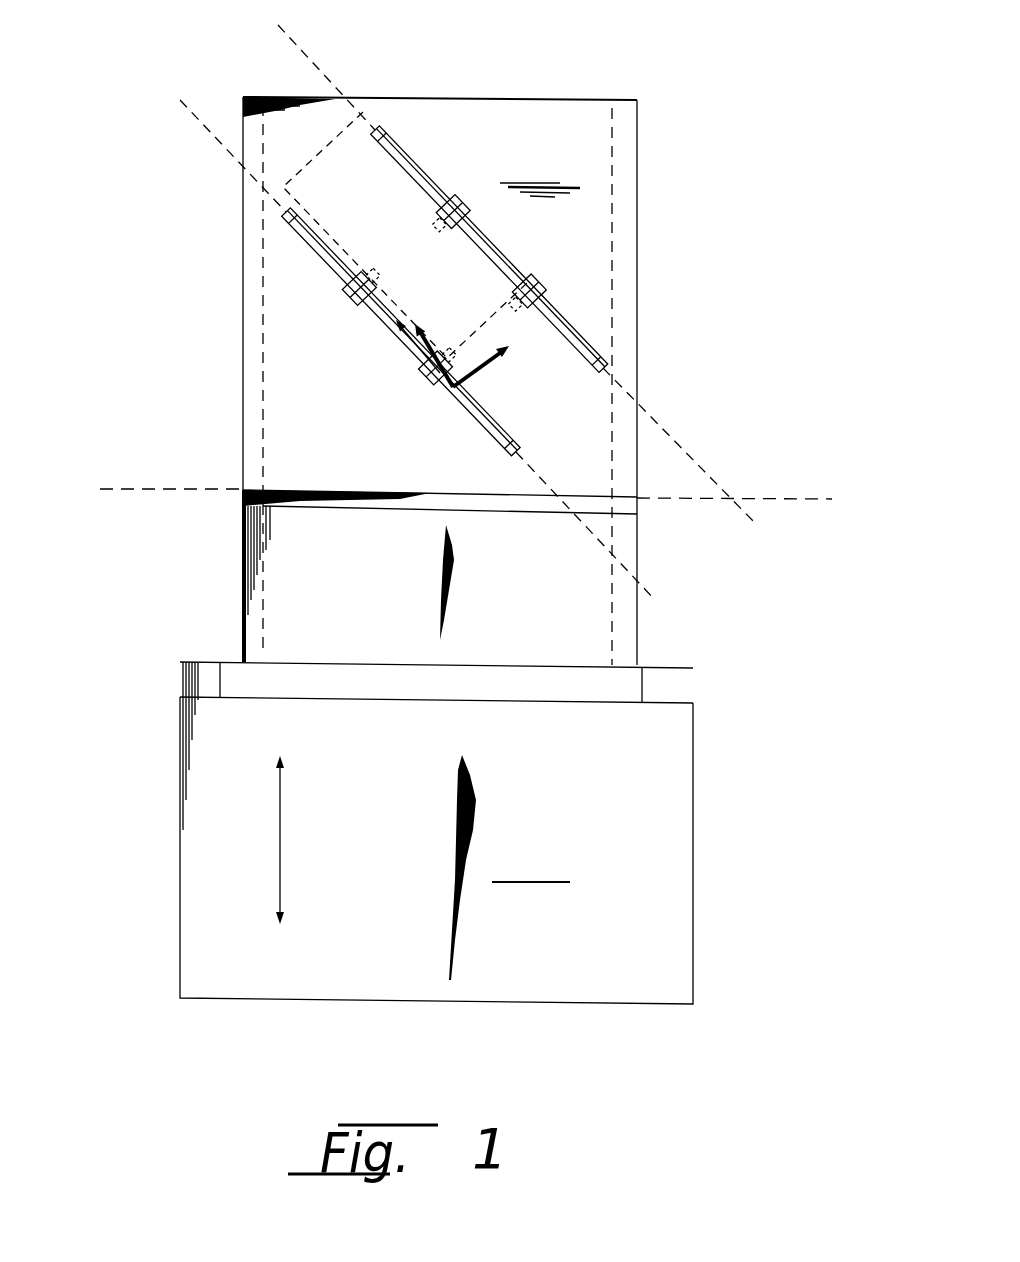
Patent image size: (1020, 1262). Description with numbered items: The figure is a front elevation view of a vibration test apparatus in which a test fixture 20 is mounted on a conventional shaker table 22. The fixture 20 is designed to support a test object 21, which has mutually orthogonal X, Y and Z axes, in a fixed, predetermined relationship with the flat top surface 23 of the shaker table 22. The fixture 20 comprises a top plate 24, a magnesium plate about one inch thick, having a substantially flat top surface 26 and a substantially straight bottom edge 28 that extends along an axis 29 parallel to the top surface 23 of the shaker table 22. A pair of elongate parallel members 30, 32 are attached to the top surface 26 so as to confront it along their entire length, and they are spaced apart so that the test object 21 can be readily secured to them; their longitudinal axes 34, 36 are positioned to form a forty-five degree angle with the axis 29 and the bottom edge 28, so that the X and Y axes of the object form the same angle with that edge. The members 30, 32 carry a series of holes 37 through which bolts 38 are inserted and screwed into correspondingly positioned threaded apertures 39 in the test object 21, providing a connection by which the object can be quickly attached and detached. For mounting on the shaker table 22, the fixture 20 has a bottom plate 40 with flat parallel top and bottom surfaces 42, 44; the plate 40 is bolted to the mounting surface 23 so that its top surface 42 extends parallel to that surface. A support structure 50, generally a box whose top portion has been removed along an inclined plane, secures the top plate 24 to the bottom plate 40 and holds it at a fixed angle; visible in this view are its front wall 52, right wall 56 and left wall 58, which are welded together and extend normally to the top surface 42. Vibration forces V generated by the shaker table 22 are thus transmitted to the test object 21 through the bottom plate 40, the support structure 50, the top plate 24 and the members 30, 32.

The test fixture 20 is at (662, 143).
The test object 21 is at (330, 135).
The shaker table 22 is at (671, 887).
The top surface of shaker table 23 is at (615, 700).
The top plate 24 is at (548, 102).
The top surface of top plate 26 is at (563, 152).
The bottom edge 28 is at (428, 492).
The bottom edge axis 29 is at (770, 498).
The elongate parallel member 30 is at (340, 272).
The elongate parallel member 32 is at (543, 303).
The longitudinal axis of member 34 is at (208, 126).
The longitudinal axis of member 36 is at (303, 50).
The holes 37 is at (467, 253).
The bolts 38 is at (432, 388).
The threaded apertures 39 is at (440, 212).
The bottom plate 40 is at (182, 673).
The top surface of bottom plate 42 is at (456, 652).
The bottom surface of bottom plate 44 is at (483, 704).
The support structure 50 is at (228, 540).
The front wall 52 is at (282, 577).
The right wall 56 is at (622, 307).
The left wall 58 is at (253, 405).